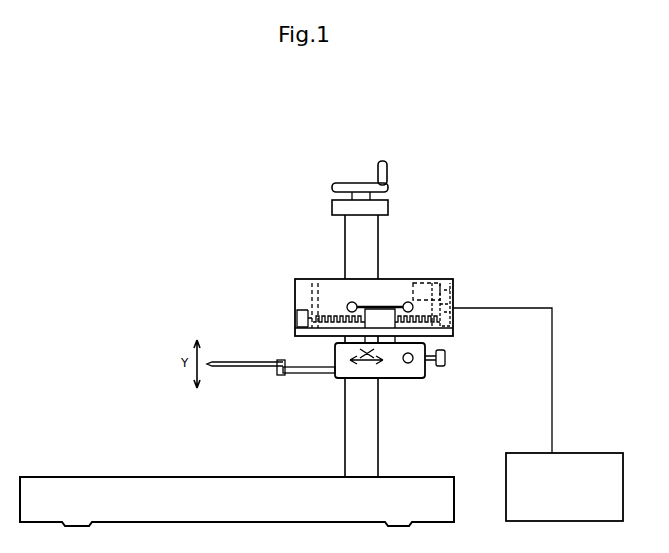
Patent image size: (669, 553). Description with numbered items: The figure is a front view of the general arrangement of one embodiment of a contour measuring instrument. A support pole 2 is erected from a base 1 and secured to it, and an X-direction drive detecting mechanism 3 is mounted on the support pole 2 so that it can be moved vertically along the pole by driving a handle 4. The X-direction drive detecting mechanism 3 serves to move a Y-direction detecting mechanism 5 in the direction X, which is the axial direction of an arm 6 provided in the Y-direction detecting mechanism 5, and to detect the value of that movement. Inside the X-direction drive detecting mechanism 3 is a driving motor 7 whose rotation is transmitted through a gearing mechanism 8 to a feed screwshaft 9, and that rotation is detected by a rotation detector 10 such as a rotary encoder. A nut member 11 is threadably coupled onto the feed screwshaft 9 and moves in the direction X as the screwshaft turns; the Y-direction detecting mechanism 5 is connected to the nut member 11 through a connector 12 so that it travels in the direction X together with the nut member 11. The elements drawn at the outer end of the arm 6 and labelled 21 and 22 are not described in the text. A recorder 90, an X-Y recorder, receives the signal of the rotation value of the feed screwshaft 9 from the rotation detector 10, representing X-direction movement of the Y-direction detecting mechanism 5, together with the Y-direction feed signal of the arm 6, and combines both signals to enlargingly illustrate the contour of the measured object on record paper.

The base 1 is at (124, 487).
The support pole 2 is at (378, 428).
The X-direction drive detecting mechanism 3 is at (409, 279).
The handle 4 is at (388, 186).
The Y-direction detecting mechanism 5 is at (415, 378).
The arm 6 is at (310, 373).
The driving motor 7 is at (425, 284).
The gearing mechanism 8 is at (448, 310).
The feed screwshaft 9 is at (334, 305).
The rotation detector 10 is at (297, 313).
The nut member 11 is at (384, 305).
The connector 12 is at (400, 338).
The clamp 21 is at (277, 360).
The probe needle 22 is at (216, 370).
The recorder 90 is at (596, 453).